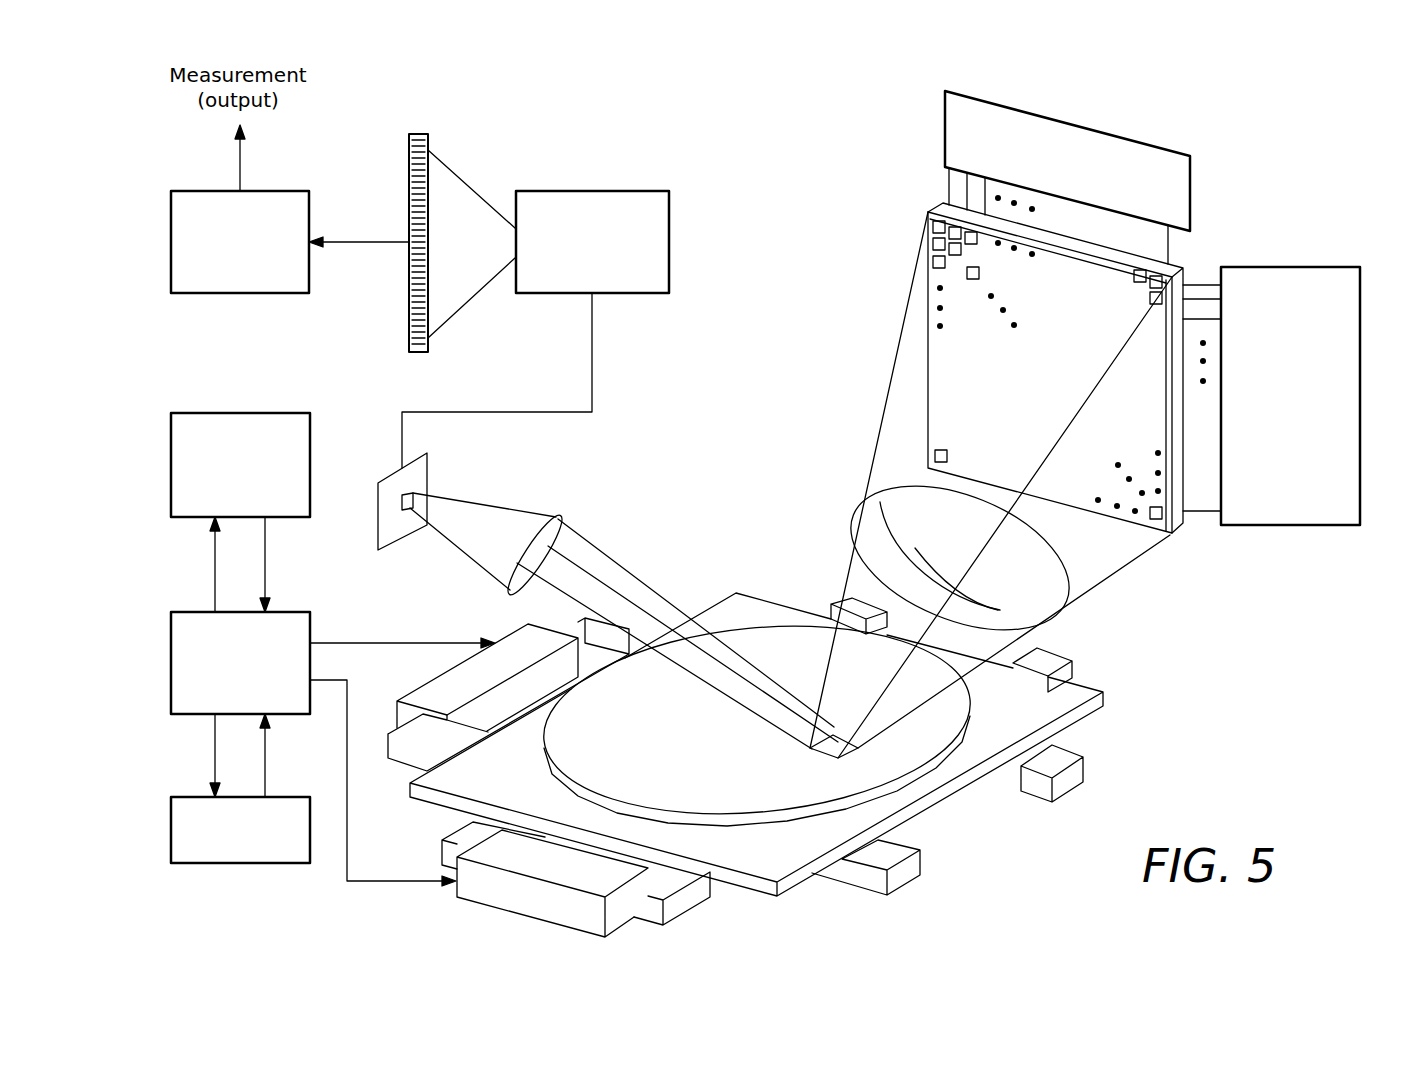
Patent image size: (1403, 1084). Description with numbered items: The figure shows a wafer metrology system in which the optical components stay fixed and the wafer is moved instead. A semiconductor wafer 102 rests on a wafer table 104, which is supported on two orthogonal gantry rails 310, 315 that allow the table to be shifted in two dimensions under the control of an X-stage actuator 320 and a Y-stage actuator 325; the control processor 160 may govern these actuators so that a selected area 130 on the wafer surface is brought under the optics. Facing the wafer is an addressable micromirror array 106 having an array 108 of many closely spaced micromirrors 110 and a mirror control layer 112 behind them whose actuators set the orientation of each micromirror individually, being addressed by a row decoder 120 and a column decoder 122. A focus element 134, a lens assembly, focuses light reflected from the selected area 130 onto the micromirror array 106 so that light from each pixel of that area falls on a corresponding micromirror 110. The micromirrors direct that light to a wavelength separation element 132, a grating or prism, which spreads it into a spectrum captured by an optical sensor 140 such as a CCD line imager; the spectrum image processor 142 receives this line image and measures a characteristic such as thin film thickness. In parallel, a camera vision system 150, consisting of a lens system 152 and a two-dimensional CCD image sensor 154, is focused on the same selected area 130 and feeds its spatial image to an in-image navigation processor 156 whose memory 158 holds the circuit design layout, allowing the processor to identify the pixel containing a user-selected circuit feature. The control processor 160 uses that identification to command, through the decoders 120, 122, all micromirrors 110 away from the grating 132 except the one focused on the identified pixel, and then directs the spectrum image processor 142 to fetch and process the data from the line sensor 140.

The semiconductor wafer 102 is at (791, 641).
The wafer table 104 is at (717, 606).
The micromirror array 106 is at (1183, 545).
The array of micromirrors 108 is at (1166, 418).
The micromirror 110 is at (1130, 284).
The mirror control layer 112 is at (1183, 457).
The row decoder 120 is at (1252, 270).
The column decoder 122 is at (1167, 154).
The selected area 130 is at (814, 762).
The wavelength separation element 132 is at (572, 192).
The focus element 134 is at (860, 503).
The optical sensor 140 is at (417, 134).
The spectrum image processor 142 is at (184, 194).
The camera vision system 150 is at (530, 489).
The lens system 152 is at (556, 520).
The two-dimensional CCD image sensor 154 is at (428, 462).
The in-image navigation processor 156 is at (184, 614).
The memory 158 is at (184, 799).
The control processor 160 is at (184, 415).
The gantry rail 310 is at (913, 870).
The gantry rail 315 is at (1068, 661).
The X-stage actuator 320 is at (450, 684).
The Y-stage actuator 325 is at (503, 902).